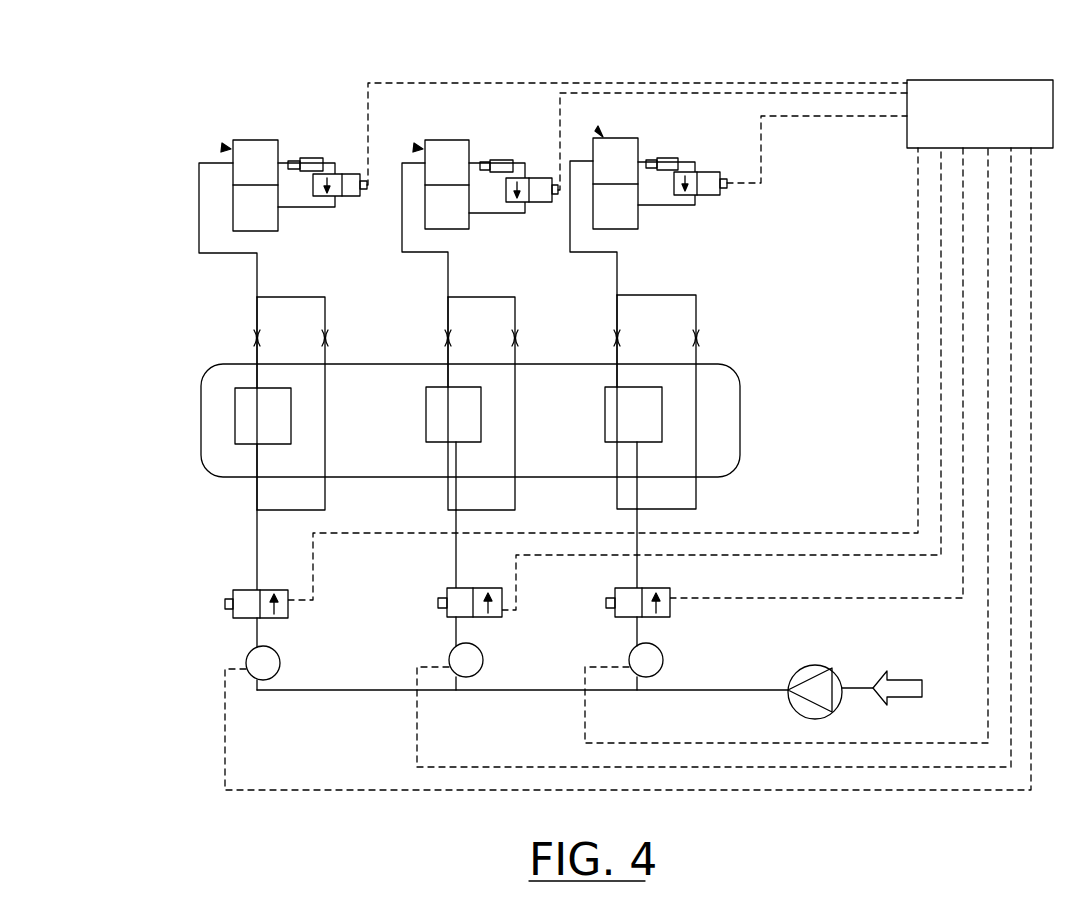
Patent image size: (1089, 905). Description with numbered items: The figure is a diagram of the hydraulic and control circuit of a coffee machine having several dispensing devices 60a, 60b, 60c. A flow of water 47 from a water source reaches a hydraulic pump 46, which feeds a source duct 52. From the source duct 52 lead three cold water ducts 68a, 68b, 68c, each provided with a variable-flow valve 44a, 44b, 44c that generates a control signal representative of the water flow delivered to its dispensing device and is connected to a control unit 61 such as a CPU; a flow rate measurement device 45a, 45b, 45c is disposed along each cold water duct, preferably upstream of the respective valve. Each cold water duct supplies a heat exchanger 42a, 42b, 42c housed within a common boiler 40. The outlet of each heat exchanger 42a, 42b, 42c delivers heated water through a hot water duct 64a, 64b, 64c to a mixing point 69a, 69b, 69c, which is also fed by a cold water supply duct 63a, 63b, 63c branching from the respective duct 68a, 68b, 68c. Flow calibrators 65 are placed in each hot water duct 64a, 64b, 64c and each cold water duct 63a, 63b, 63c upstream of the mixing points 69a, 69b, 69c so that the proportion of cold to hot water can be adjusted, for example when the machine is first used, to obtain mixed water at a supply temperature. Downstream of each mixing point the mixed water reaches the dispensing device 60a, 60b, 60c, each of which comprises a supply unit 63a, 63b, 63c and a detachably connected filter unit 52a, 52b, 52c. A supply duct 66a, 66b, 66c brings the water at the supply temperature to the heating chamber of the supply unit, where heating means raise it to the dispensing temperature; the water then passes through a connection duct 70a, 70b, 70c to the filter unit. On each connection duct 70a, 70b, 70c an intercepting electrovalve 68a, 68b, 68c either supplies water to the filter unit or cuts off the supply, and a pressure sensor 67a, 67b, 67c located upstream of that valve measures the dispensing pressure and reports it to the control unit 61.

The boiler 40 is at (213, 412).
The heat exchanger 42a is at (258, 432).
The heat exchanger 42b is at (448, 432).
The heat exchanger 42c is at (617, 432).
The variable-flow valve 44a is at (233, 604).
The variable-flow valve 44b is at (438, 604).
The variable-flow valve 44c is at (606, 604).
The flow rate measurement device 45a is at (281, 660).
The flow rate measurement device 45b is at (484, 665).
The flow rate measurement device 45c is at (663, 662).
The hydraulic pump 46 is at (790, 712).
The flow of water 47 is at (898, 686).
The source duct 52 is at (312, 692).
The filter unit 52a is at (267, 217).
The filter unit 52b is at (447, 222).
The filter unit 52c is at (614, 218).
The dispensing device 60a is at (228, 147).
The dispensing device 60b is at (420, 147).
The dispensing device 60c is at (600, 132).
The control unit 61 is at (985, 92).
The supply unit 63a is at (255, 152).
The supply unit 63b is at (453, 152).
The supply unit 63c is at (626, 150).
The hot water duct 64a is at (257, 322).
The hot water duct 64b is at (448, 322).
The hot water duct 64c is at (616, 318).
The flow calibrator 65 is at (250, 340).
The supply duct 66a is at (215, 253).
The supply duct 66b is at (403, 218).
The supply duct 66c is at (617, 273).
The pressure sensor 67a is at (302, 160).
The pressure sensor 67b is at (492, 162).
The pressure sensor 67c is at (672, 163).
The intercepting electrovalve 68a is at (345, 175).
The intercepting electrovalve 68b is at (547, 187).
The intercepting electrovalve 68c is at (705, 200).
The mixing point 69a is at (257, 299).
The mixing point 69b is at (448, 299).
The mixing point 69c is at (617, 297).
The connection duct 70a is at (308, 209).
The connection duct 70b is at (492, 215).
The connection duct 70c is at (675, 210).